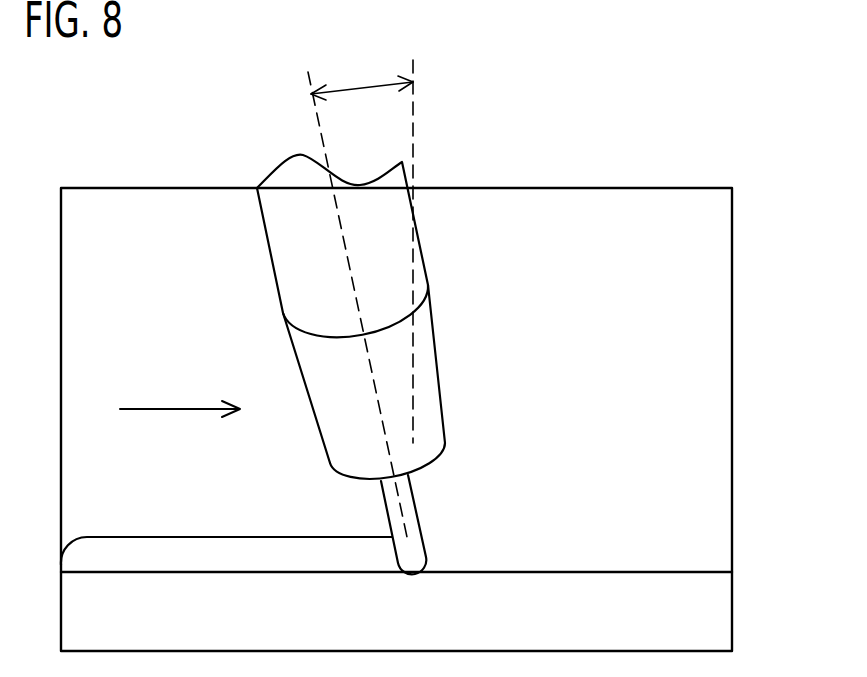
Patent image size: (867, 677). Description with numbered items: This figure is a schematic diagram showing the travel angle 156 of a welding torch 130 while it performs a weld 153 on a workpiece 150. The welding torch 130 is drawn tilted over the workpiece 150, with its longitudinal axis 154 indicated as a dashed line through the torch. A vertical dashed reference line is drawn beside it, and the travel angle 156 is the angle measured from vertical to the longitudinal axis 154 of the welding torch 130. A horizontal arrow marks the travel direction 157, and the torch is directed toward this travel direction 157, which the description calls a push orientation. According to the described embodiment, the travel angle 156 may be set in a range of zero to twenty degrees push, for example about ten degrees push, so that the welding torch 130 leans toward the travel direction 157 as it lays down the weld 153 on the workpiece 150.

The workpiece 150 is at (697, 142).
The welding torch 130 is at (258, 256).
The weld 153 is at (162, 545).
The longitudinal axis 154 is at (320, 127).
The travel angle 156 is at (362, 82).
The travel direction 157 is at (182, 409).